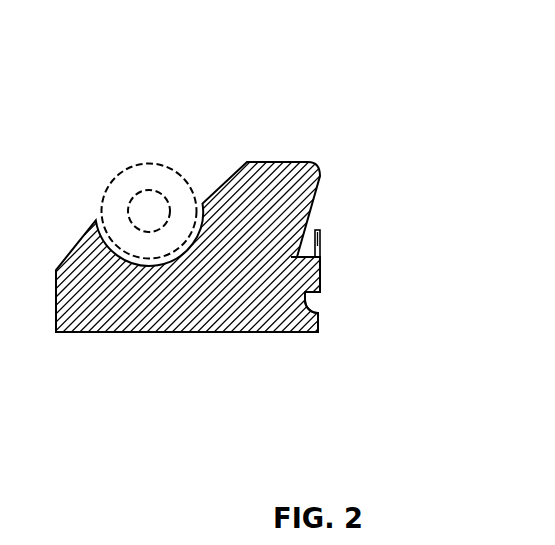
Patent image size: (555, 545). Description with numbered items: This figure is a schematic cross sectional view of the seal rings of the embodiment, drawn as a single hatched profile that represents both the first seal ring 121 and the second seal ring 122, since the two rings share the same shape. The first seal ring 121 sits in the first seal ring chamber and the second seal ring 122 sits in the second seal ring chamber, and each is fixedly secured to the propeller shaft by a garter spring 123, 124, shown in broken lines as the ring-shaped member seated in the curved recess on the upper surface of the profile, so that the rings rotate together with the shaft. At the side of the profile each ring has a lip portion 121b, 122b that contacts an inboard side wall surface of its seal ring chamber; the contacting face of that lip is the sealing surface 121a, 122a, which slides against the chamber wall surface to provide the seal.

The first seal ring 121 is at (252, 185).
The second seal ring 122 is at (240, 197).
The garter spring 123 is at (107, 185).
The garter spring 124 is at (111, 180).
The sealing surface 121a is at (422, 218).
The sealing surface 122a is at (321, 260).
The lip portion 121b is at (417, 341).
The lip portion 122b is at (320, 280).